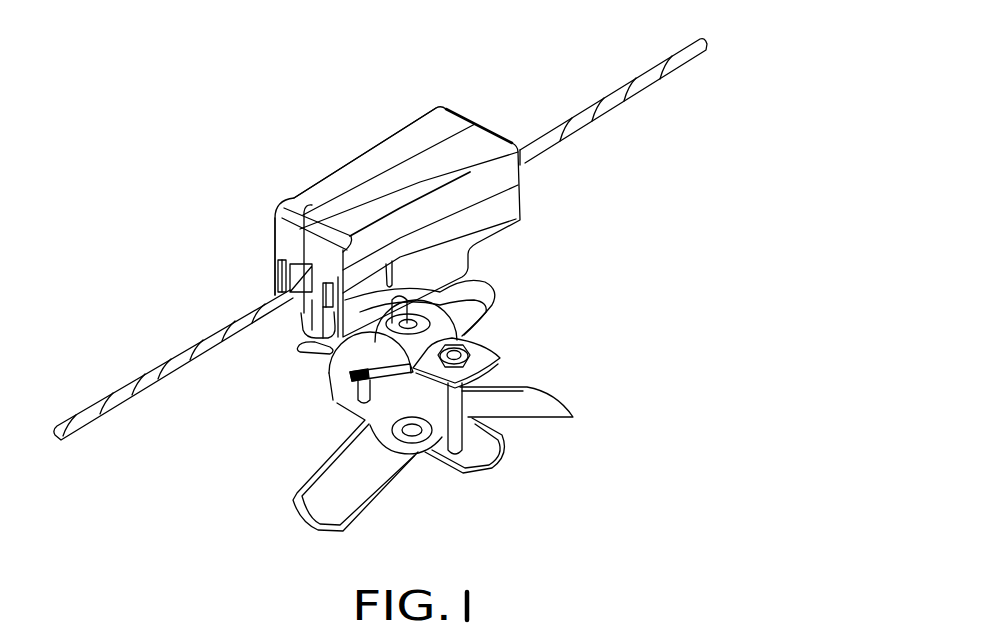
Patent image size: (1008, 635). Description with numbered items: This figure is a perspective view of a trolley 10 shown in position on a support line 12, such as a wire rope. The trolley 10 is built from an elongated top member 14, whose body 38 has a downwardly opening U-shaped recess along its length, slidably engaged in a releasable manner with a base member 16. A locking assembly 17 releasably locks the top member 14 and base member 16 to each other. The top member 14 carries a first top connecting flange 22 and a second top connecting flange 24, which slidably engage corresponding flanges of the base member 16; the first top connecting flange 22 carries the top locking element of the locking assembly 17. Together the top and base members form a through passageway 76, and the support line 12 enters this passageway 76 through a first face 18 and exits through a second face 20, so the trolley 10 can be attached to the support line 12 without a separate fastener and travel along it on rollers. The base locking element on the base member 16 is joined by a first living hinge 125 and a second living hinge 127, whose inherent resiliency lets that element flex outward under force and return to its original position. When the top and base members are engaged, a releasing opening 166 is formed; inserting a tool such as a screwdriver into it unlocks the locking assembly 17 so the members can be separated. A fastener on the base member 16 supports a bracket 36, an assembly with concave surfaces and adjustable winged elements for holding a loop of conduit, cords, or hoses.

The trolley 10 is at (253, 149).
The support line 12 is at (644, 68).
The top member 14 is at (423, 108).
The base member 16 is at (522, 229).
The locking assembly 17 is at (400, 267).
The first face 18 is at (289, 233).
The second face 20 is at (523, 172).
The first top connecting flange 22 is at (300, 329).
The second top connecting flange 24 is at (289, 287).
The bracket 36 is at (297, 507).
The body 38 is at (369, 162).
The through passageway 76 is at (299, 274).
The first living hinge 125 is at (338, 350).
The second living hinge 127 is at (489, 302).
The releasing opening 166 is at (290, 345).